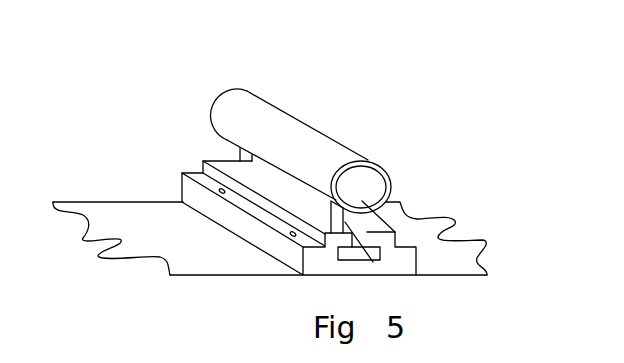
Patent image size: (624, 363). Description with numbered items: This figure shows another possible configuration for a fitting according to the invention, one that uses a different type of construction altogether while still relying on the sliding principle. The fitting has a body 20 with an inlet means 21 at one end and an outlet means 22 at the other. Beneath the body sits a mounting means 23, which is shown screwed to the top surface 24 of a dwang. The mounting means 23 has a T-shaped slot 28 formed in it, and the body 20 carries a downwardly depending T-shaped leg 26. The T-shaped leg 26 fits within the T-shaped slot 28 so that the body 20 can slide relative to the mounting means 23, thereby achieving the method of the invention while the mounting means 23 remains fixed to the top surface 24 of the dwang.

The body 20 is at (311, 144).
The inlet means 21 is at (203, 99).
The outlet means 22 is at (406, 176).
The mounting means 23 is at (303, 264).
The top surface 24 is at (205, 238).
The T-shaped leg 26 is at (236, 164).
The T-shaped slot 28 is at (352, 250).